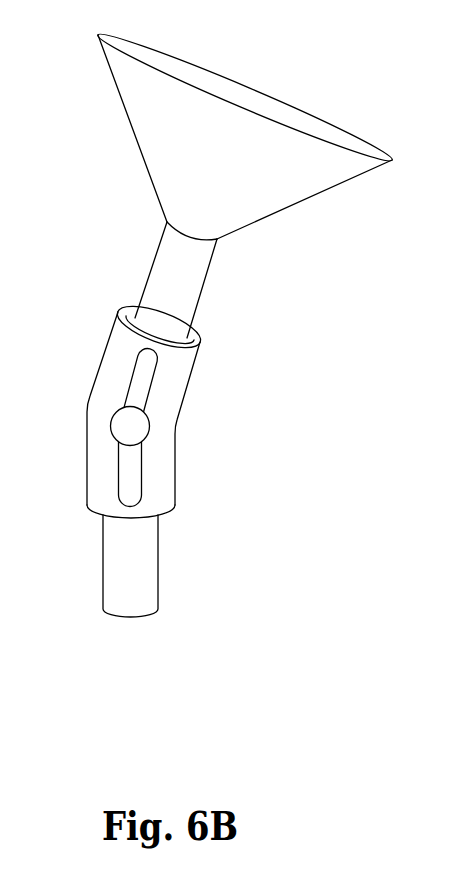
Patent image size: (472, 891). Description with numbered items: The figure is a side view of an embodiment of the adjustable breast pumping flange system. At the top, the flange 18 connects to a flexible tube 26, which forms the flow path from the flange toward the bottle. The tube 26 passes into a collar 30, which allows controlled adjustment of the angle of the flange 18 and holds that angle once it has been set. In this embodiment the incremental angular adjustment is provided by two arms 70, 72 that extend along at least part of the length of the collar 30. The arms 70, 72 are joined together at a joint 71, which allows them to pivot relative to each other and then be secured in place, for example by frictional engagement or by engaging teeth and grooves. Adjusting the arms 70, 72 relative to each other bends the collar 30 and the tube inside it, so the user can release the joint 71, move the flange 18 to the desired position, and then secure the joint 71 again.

The flange 18 is at (333, 125).
The flexible tube 26 is at (152, 260).
The collar 30 is at (88, 402).
The arm 70 is at (156, 375).
The joint 71 is at (130, 427).
The arm 72 is at (133, 478).